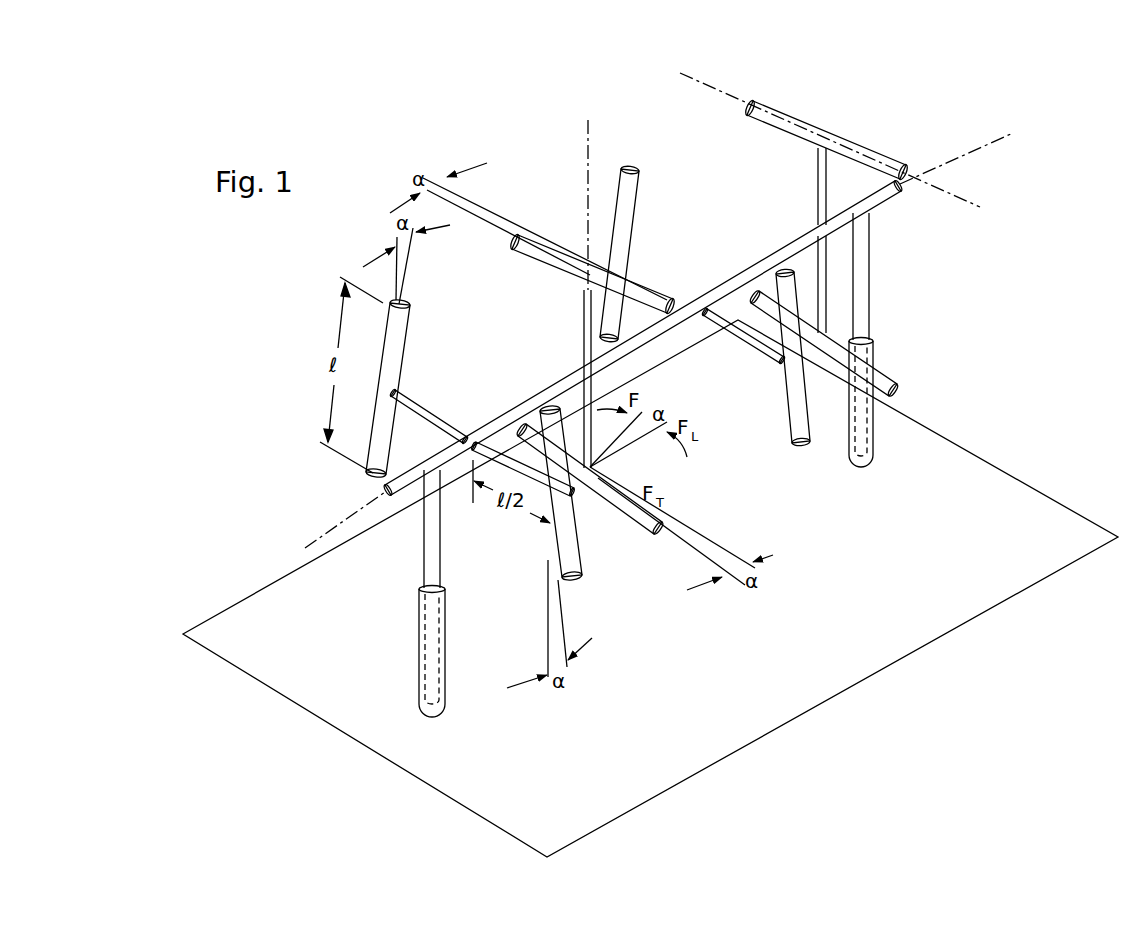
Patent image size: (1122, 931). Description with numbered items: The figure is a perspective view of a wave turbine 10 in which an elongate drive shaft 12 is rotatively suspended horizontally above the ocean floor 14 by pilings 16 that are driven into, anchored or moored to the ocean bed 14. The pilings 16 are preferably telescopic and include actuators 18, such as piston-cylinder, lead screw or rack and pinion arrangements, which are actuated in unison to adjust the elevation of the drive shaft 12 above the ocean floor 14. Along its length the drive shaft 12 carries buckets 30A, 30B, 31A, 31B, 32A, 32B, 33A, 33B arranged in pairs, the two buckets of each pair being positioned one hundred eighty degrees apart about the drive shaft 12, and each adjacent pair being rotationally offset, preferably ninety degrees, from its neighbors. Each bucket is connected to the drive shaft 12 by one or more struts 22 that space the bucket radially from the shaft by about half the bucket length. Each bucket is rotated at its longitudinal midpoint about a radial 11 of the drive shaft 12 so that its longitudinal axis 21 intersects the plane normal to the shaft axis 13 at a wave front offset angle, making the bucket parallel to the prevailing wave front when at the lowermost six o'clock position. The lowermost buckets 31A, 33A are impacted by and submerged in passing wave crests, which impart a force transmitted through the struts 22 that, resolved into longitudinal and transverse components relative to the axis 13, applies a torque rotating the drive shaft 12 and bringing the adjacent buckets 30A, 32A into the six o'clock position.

The wave turbine 10 is at (178, 302).
The radial 11 is at (585, 148).
The drive shaft 12 is at (780, 262).
The axis 13 is at (307, 537).
The ocean floor 14 is at (233, 663).
The pilings 16 is at (417, 705).
The actuators 18 is at (418, 648).
The bucket longitudinal axis 21 is at (970, 203).
The struts 22 is at (427, 408).
The bucket 30A is at (368, 478).
The bucket 30B is at (566, 580).
The bucket 31A is at (662, 537).
The bucket 31B is at (543, 268).
The bucket 32A is at (637, 194).
The bucket 32B is at (800, 450).
The bucket 33A is at (900, 393).
The bucket 33B is at (817, 125).